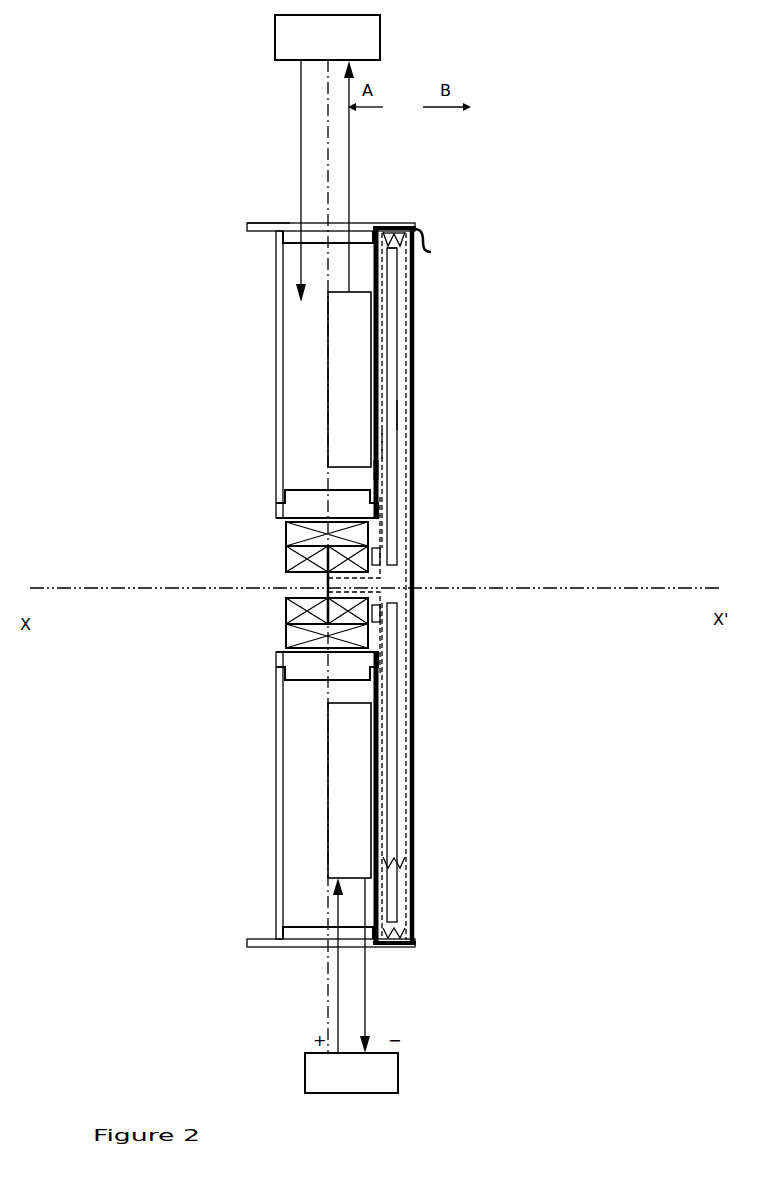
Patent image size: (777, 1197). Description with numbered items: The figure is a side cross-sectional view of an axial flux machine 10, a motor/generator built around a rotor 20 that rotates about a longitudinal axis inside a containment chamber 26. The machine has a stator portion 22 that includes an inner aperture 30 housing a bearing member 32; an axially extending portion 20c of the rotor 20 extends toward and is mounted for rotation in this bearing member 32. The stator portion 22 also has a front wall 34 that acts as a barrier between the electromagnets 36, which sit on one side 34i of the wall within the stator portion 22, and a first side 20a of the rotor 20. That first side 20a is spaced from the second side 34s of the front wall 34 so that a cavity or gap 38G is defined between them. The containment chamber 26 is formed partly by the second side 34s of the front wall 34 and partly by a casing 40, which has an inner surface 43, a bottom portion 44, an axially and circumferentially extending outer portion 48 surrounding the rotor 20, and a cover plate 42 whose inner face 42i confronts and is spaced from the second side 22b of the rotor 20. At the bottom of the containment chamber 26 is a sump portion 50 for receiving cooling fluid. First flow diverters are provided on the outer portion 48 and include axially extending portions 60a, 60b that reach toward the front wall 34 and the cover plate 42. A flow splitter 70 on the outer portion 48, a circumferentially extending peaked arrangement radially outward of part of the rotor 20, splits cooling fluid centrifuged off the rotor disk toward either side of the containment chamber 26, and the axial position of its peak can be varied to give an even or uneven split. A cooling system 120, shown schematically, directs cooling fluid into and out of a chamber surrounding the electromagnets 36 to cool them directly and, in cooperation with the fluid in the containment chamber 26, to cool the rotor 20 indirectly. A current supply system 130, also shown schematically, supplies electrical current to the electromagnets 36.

The axial flux machine 10 is at (258, 170).
The cooling system 120 is at (370, 42).
The current supply system 130 is at (404, 1073).
The rotor 20 is at (393, 338).
The first side of the rotor 20a is at (380, 443).
The axially extending portion of the rotor 20c is at (300, 577).
The stator portion 22 is at (364, 217).
The second side of the rotor 22b is at (397, 415).
The containment chamber 26 is at (388, 238).
The inner aperture 30 is at (298, 542).
The bearing member 32 is at (298, 562).
The front wall 34 is at (381, 501).
The one side of the front wall 34i is at (381, 372).
The second side of the front wall 34s is at (402, 233).
The electromagnets 36 is at (345, 357).
The cavity or gap 38G is at (381, 512).
The casing 40 is at (404, 230).
The cover plate 42 is at (412, 226).
The inner face of the cover plate 42i is at (401, 643).
The inner surface of the casing 43 is at (408, 930).
The bottom portion of the casing 44 is at (392, 900).
The outer portion of the casing 48 is at (385, 232).
The sump portion 50 is at (405, 868).
The axially extending portion of the first flow diverter 60a is at (358, 217).
The axially extending portion of the first flow diverter 60b is at (431, 252).
The flow splitter 70 is at (389, 242).